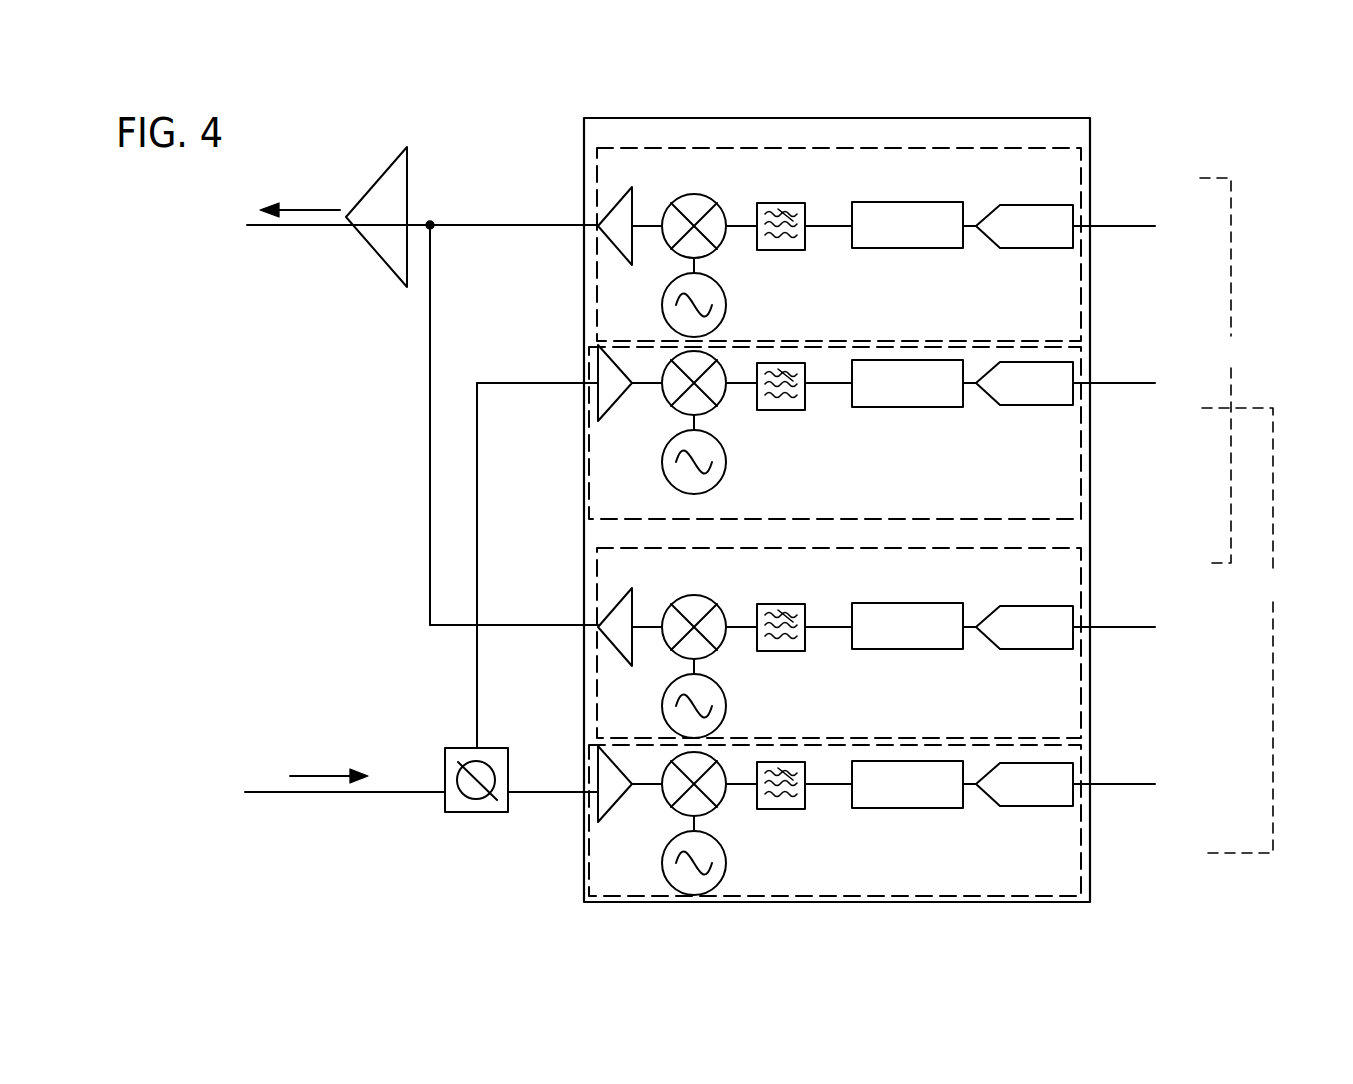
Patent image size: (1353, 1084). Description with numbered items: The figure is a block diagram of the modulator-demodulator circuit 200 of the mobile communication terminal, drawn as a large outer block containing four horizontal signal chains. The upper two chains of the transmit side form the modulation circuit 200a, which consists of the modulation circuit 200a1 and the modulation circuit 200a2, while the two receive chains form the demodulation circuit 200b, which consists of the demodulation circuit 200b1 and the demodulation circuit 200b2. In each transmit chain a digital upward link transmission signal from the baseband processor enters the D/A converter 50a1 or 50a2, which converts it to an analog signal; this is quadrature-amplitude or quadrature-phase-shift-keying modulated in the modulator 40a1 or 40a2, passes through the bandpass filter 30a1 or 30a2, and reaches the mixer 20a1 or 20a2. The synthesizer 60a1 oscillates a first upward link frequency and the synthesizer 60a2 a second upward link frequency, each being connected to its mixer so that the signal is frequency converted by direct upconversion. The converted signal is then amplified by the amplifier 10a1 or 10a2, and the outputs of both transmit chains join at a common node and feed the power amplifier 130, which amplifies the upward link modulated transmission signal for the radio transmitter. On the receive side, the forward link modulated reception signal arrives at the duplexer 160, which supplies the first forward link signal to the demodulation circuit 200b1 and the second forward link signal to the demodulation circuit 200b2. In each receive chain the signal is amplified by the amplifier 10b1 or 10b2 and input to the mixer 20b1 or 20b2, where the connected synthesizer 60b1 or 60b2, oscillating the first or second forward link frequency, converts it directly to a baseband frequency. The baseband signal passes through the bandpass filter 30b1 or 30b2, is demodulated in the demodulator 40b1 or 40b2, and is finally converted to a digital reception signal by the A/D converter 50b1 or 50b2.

The power amplifier 130 is at (372, 188).
The duplexer 160 is at (477, 812).
The modulator-demodulator circuit 200 is at (1073, 118).
The modulation circuit 200a is at (1231, 370).
The demodulation circuit 200b is at (1250, 630).
The modulation circuit 200a1 is at (1088, 192).
The demodulation circuit 200b1 is at (1088, 422).
The modulation circuit 200a2 is at (1088, 578).
The demodulation circuit 200b2 is at (1088, 866).
The amplifier 10a1 is at (625, 209).
The mixer 20a1 is at (694, 210).
The filter 30a1 is at (777, 206).
The modulator 40a1 is at (907, 208).
The D/A converter 50a1 is at (1024, 208).
The synthesizer 60a1 is at (717, 297).
The amplifier 10b1 is at (627, 392).
The mixer 20b1 is at (735, 357).
The filter 30b1 is at (782, 403).
The demodulator 40b1 is at (907, 401).
The A/D converter 50b1 is at (1024, 402).
The synthesizer 60b1 is at (718, 461).
The amplifier 10a2 is at (628, 611).
The mixer 20a2 is at (694, 611).
The filter 30a2 is at (777, 607).
The modulator 40a2 is at (907, 609).
The D/A converter 50a2 is at (1024, 609).
The synthesizer 60a2 is at (716, 697).
The amplifier 10b2 is at (623, 799).
The mixer 20b2 is at (732, 761).
The filter 30b2 is at (784, 804).
The demodulator 40b2 is at (907, 802).
The A/D converter 50b2 is at (1024, 803).
The synthesizer 60b2 is at (723, 856).